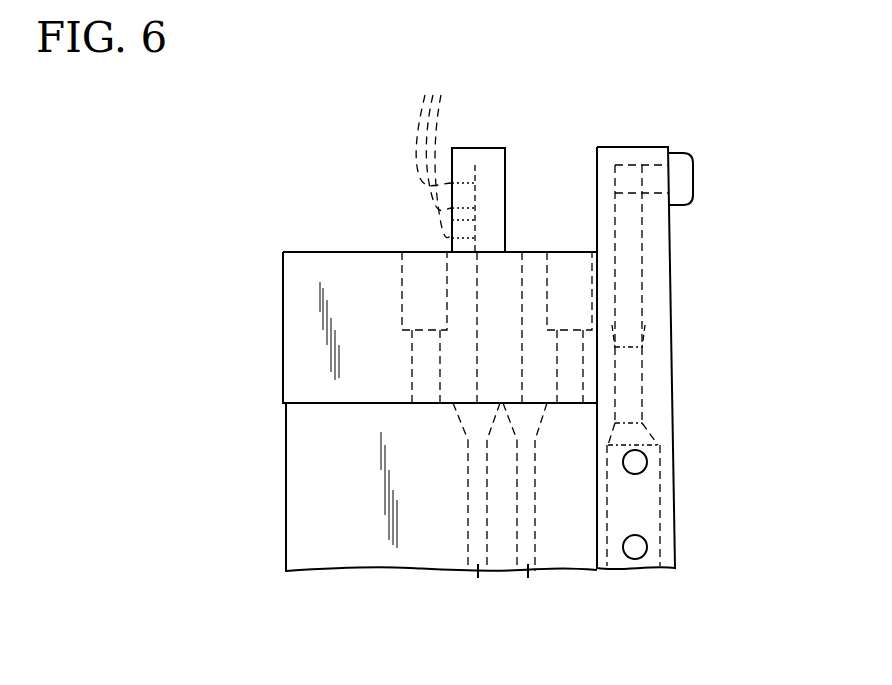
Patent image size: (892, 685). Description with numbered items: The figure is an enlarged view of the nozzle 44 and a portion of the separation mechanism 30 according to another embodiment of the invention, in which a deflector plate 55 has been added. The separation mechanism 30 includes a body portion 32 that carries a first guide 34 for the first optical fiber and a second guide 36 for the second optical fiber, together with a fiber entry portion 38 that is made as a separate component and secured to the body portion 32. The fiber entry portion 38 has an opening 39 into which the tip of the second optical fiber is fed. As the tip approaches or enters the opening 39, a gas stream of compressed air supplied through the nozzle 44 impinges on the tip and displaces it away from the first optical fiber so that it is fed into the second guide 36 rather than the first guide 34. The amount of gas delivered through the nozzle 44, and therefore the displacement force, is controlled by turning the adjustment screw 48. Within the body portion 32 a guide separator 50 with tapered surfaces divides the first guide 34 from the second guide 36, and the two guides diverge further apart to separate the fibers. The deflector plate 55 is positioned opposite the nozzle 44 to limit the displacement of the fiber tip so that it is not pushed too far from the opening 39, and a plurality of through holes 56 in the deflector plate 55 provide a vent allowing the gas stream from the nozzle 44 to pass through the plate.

The separation mechanism 30 is at (212, 203).
The body portion 32 is at (286, 517).
The first guide 34 is at (528, 578).
The second guide 36 is at (478, 578).
The fiber entry portion 38 is at (283, 300).
The opening 39 is at (497, 297).
The nozzle 44 is at (634, 147).
The adjustment screw 48 is at (693, 185).
The guide separator 50 is at (490, 407).
The deflector plate 55 is at (490, 152).
The through holes 56 is at (434, 150).